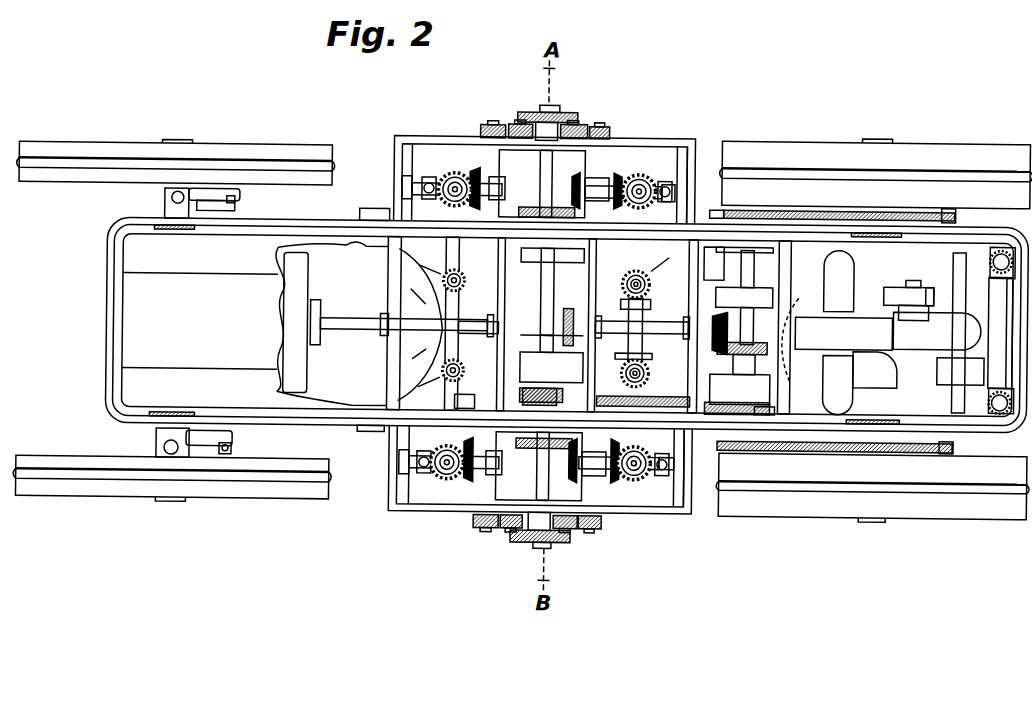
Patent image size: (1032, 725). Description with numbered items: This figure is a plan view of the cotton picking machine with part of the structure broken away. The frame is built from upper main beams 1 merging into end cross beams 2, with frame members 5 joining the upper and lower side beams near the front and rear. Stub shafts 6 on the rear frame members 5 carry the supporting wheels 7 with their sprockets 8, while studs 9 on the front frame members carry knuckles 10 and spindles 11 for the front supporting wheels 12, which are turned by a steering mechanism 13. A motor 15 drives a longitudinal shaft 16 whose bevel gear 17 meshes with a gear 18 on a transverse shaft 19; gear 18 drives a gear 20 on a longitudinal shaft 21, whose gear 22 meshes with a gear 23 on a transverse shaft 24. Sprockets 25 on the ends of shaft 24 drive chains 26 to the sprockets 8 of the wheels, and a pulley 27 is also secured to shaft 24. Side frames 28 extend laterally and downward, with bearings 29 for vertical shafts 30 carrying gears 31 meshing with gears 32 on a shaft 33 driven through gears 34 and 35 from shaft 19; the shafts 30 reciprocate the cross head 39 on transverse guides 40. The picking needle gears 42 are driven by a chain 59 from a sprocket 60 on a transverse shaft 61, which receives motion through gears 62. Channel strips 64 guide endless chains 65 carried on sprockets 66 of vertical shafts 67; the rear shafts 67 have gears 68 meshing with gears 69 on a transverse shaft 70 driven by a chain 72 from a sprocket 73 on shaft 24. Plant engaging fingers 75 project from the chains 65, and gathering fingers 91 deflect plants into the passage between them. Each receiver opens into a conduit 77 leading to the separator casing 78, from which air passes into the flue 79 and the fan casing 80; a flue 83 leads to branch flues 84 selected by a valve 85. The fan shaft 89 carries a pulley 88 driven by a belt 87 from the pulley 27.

The upper main beams 1 is at (388, 236).
The end cross beams 2 is at (108, 358).
The frame members 5 is at (165, 238).
The stub shafts 6 is at (873, 136).
The supporting wheels 7 is at (980, 152).
The sprockets 8 is at (933, 212).
The studs 9 is at (188, 215).
The knuckles 10 is at (165, 200).
The spindles 11 is at (178, 143).
The front supporting wheels 12 is at (62, 147).
The steering mechanism 13 is at (212, 199).
The motor 15 is at (142, 296).
The longitudinal shaft 16 is at (327, 322).
The bevel gear 17 is at (538, 272).
The gear 18 is at (488, 344).
The transverse shaft 19 is at (548, 272).
The gear 20 is at (582, 300).
The longitudinal shaft 21 is at (665, 328).
The gear 22 is at (728, 322).
The gear 23 is at (799, 327).
The transverse shaft 24 is at (745, 256).
The sprockets 25 is at (737, 207).
The chains 26 is at (807, 208).
The pulley 27 is at (744, 294).
The side frames 28 is at (650, 482).
The bearings 29 is at (450, 155).
The vertical shafts 30 is at (453, 185).
The gear 31 is at (462, 172).
The gear 32 is at (473, 168).
The shaft 33 is at (523, 543).
The gear 34 is at (575, 545).
The gear 35 is at (509, 525).
The cross head 39 is at (408, 185).
The transverse guides 40 is at (408, 160).
The gears 42 is at (613, 140).
The chain 59 is at (560, 112).
The sprocket 60 is at (523, 111).
The transverse shaft 61 is at (538, 168).
The gears 62 is at (440, 356).
The channel strips 64 is at (552, 288).
The endless chains 65 is at (415, 296).
The sprockets 66 is at (437, 281).
The vertical shafts 67 is at (437, 286).
The gears 68 is at (650, 288).
The gears 69 is at (636, 352).
The transverse shaft 70 is at (655, 460).
The chain 72 is at (680, 406).
The sprocket 73 is at (763, 410).
The plant engaging fingers 75 is at (380, 322).
The conduit 77 is at (837, 332).
The separator casing 78 is at (843, 333).
The flue 79 is at (887, 370).
The fan casing 80 is at (937, 331).
The flue 83 is at (954, 372).
The branch flues 84 is at (1002, 246).
The valve 85 is at (1012, 362).
The belt 87 is at (898, 286).
The pulley 88 is at (927, 286).
The shaft 89 is at (922, 283).
The gathering fingers 91 is at (373, 246).